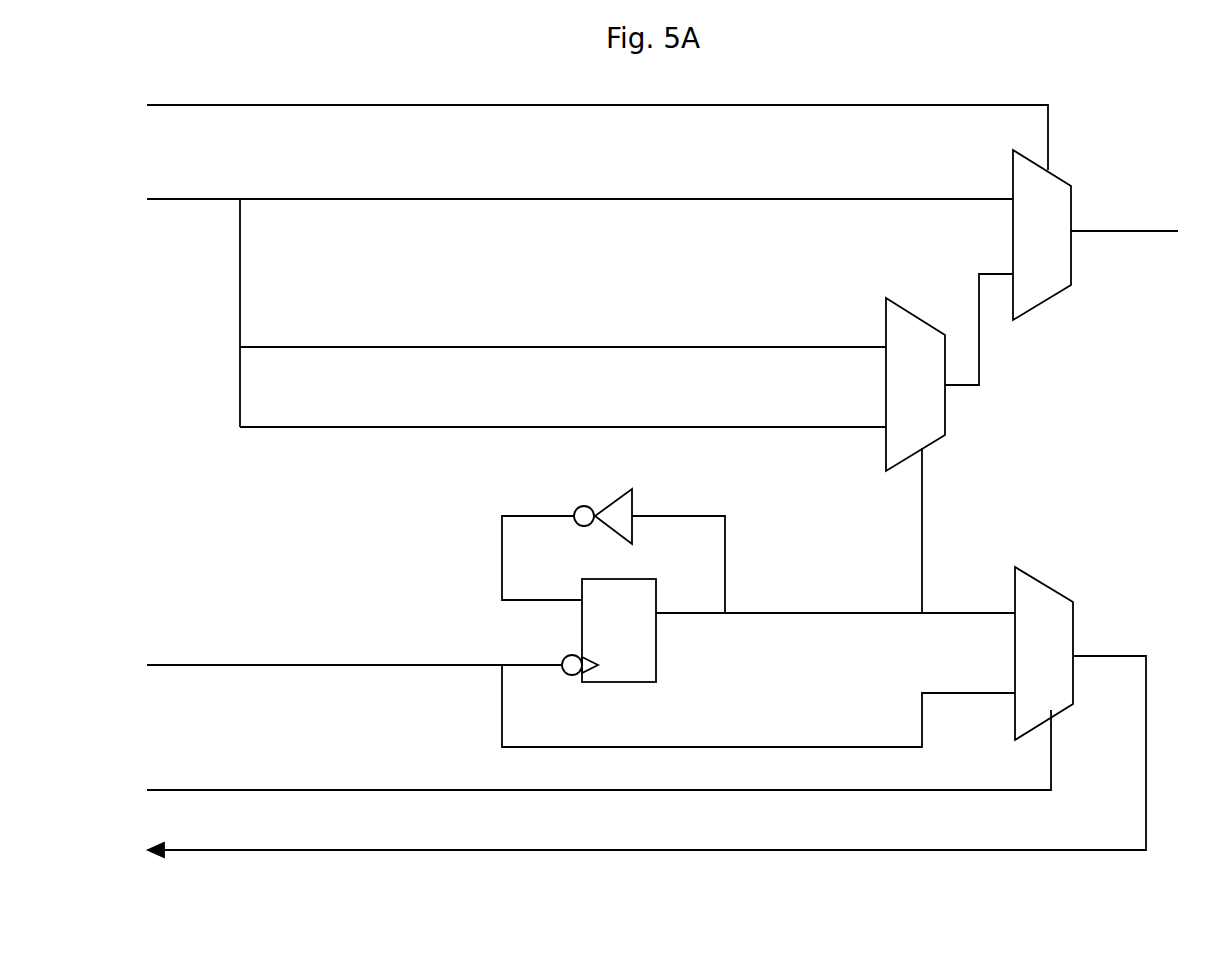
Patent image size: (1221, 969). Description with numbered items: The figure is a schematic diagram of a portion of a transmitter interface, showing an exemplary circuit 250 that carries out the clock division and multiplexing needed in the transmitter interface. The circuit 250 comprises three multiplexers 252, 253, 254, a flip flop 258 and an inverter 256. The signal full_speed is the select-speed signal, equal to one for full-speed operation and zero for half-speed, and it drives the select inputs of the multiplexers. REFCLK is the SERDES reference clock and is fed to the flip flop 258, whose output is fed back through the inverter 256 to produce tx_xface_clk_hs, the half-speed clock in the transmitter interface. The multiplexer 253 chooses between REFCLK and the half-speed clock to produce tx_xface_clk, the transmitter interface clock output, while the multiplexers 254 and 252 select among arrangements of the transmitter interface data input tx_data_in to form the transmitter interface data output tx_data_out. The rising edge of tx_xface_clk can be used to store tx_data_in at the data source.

The circuit 250 is at (1030, 471).
The multiplexer 252 is at (1047, 297).
The multiplexer 253 is at (1050, 590).
The multiplexer 254 is at (886, 322).
The inverter 256 is at (580, 525).
The flip flop 258 is at (657, 632).